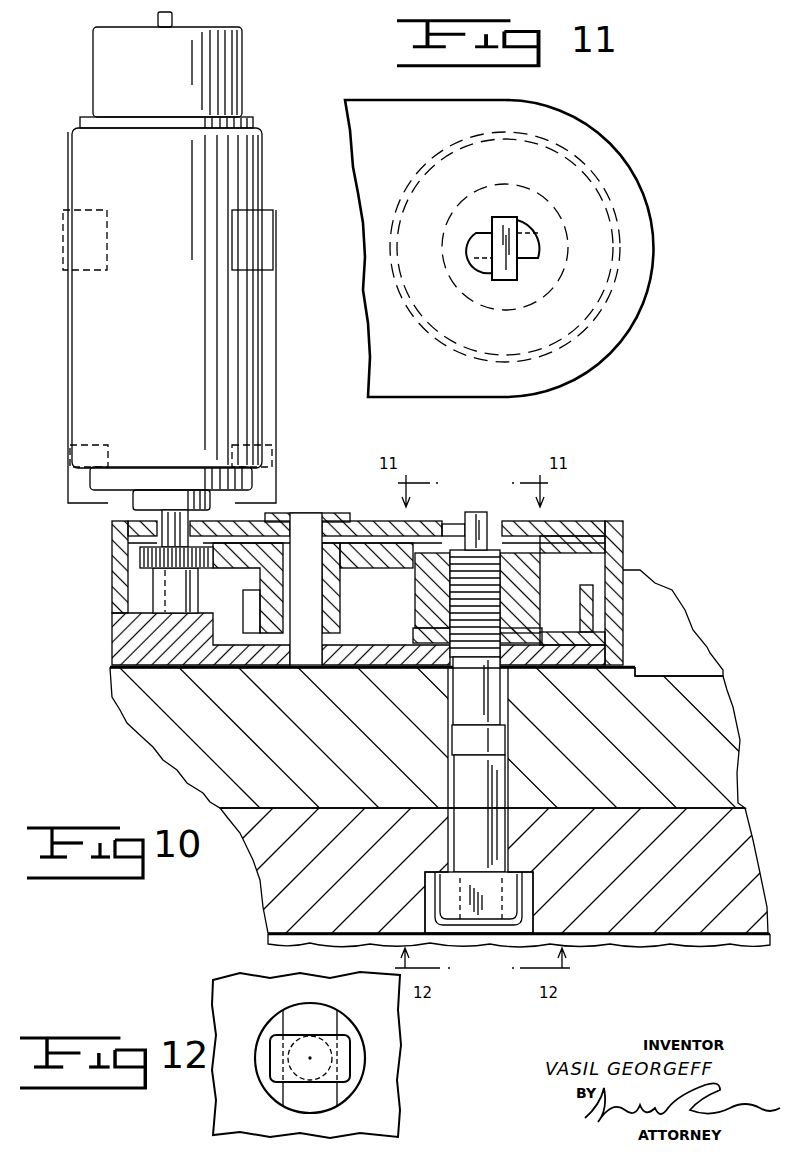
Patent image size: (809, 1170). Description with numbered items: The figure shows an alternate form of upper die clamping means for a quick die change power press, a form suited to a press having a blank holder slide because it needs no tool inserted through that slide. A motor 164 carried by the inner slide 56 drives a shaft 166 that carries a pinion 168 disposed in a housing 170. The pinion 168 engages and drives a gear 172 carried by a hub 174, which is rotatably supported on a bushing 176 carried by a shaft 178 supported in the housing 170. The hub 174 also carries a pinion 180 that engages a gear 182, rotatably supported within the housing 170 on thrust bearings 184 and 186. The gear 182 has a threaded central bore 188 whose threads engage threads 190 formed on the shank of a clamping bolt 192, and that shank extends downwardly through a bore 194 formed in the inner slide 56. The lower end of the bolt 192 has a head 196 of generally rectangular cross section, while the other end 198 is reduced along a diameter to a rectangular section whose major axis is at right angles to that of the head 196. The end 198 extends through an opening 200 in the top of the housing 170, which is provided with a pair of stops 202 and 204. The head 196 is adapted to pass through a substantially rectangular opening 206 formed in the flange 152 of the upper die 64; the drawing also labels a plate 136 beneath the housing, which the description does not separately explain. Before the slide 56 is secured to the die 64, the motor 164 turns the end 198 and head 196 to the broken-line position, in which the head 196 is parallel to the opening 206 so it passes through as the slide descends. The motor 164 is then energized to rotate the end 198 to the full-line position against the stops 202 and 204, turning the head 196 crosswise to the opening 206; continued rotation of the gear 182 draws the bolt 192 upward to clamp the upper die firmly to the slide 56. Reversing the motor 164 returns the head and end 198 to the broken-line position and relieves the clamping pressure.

In FIG. 10, the inner slide 56 is at (702, 668).
In FIG. 10, the upper die 64 is at (680, 950).
In FIG. 10, the mounting plate 136 is at (722, 733).
In FIG. 12, the mounting plate 136 is at (380, 1115).
In FIG. 10, the flange 152 is at (741, 832).
In FIG. 10, the motor 164 is at (258, 398).
In FIG. 10, the shaft 166 is at (160, 513).
In FIG. 10, the pinion 168 is at (130, 562).
In FIG. 10, the housing 170 is at (112, 606).
In FIG. 11, the housing 170 is at (578, 355).
In FIG. 10, the gear 172 is at (403, 548).
In FIG. 10, the hub 174 is at (350, 548).
In FIG. 10, the bushing 176 is at (350, 667).
In FIG. 10, the shaft 178 is at (310, 667).
In FIG. 10, the pinion 180 is at (243, 667).
In FIG. 10, the gear 182 is at (588, 622).
In FIG. 10, the thrust bearing 184 is at (435, 525).
In FIG. 10, the thrust bearing 186 is at (433, 672).
In FIG. 10, the threaded central bore 188 is at (498, 530).
In FIG. 10, the threads 190 is at (510, 670).
In FIG. 10, the clamping bolt 192 is at (505, 777).
In FIG. 12, the clamping bolt 192 is at (340, 1093).
In FIG. 10, the bore 194 is at (505, 717).
In FIG. 10, the head 196 is at (515, 900).
In FIG. 12, the head 196 is at (355, 1070).
In FIG. 10, the end 198 is at (485, 520).
In FIG. 11, the end 198 is at (508, 280).
In FIG. 10, the opening 200 is at (530, 526).
In FIG. 11, the opening 200 is at (535, 240).
In FIG. 10, the stop 202 is at (475, 520).
In FIG. 11, the stop 202 is at (488, 228).
In FIG. 11, the stop 204 is at (527, 264).
In FIG. 10, the opening 206 is at (505, 832).
In FIG. 12, the opening 206 is at (333, 1015).